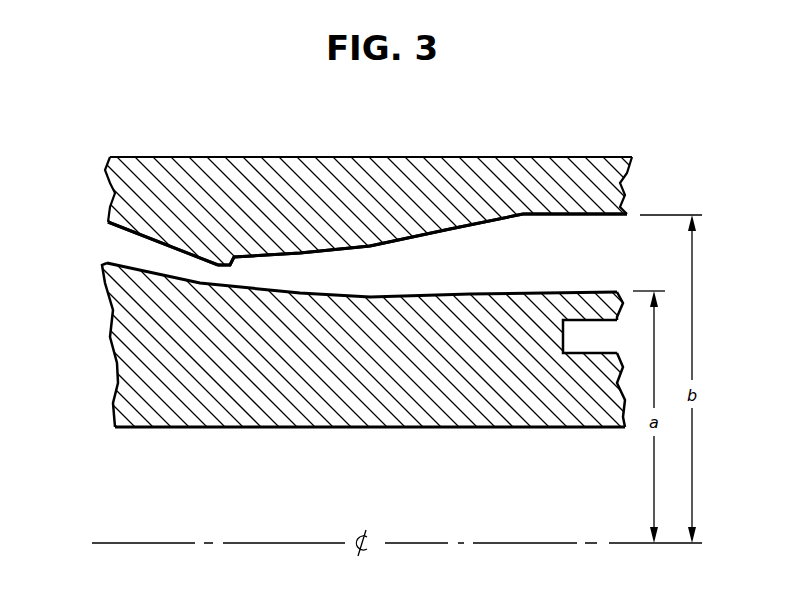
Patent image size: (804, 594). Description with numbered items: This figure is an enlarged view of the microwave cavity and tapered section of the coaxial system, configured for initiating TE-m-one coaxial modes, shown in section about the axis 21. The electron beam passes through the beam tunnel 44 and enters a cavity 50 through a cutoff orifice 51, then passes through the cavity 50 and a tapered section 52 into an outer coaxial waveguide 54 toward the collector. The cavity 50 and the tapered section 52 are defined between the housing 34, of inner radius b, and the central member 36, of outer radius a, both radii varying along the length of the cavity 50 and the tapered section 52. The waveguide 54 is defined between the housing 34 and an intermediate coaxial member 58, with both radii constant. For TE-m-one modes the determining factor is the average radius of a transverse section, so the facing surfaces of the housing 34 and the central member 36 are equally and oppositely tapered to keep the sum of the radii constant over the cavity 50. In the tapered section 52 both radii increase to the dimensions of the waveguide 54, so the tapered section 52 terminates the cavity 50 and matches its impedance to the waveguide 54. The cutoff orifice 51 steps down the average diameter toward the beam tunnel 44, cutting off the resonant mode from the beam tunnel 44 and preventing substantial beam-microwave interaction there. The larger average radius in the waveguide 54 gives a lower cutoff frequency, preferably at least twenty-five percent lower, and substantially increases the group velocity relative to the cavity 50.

The centerline axis 21 is at (488, 543).
The housing 34 is at (118, 185).
The central member 36 is at (117, 366).
The beam tunnel 44 is at (150, 247).
The cavity 50 is at (293, 268).
The cutoff orifice 51 is at (232, 275).
The tapered section 52 is at (452, 252).
The outer coaxial waveguide 54 is at (608, 240).
The intermediate coaxial member 58 is at (578, 307).